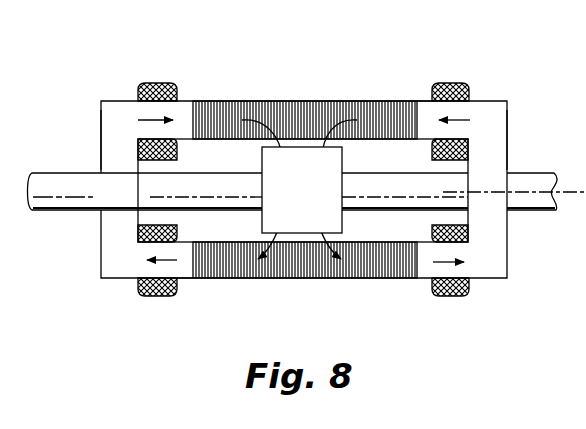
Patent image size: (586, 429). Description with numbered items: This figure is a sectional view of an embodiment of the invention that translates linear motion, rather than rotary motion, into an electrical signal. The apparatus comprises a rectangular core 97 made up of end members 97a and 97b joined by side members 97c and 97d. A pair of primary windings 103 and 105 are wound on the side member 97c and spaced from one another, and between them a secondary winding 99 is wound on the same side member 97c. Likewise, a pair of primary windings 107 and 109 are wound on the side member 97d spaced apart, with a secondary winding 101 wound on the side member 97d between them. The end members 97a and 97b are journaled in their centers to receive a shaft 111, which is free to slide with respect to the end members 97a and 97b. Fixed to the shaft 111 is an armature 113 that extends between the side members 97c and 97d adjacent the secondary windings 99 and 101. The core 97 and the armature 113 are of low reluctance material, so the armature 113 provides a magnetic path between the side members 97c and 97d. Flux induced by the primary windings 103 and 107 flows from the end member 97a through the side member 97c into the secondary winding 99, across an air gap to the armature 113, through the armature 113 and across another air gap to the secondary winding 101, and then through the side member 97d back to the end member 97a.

The rectangular core 97 is at (511, 280).
The end member 97a is at (107, 145).
The end member 97b is at (500, 156).
The side member 97c is at (422, 108).
The side member 97d is at (184, 264).
The secondary winding 99 is at (397, 102).
The secondary winding 101 is at (382, 280).
The primary winding 103 is at (170, 84).
The primary winding 105 is at (460, 83).
The primary winding 107 is at (147, 297).
The primary winding 109 is at (446, 297).
The shaft 111 is at (543, 200).
The armature 113 is at (337, 168).